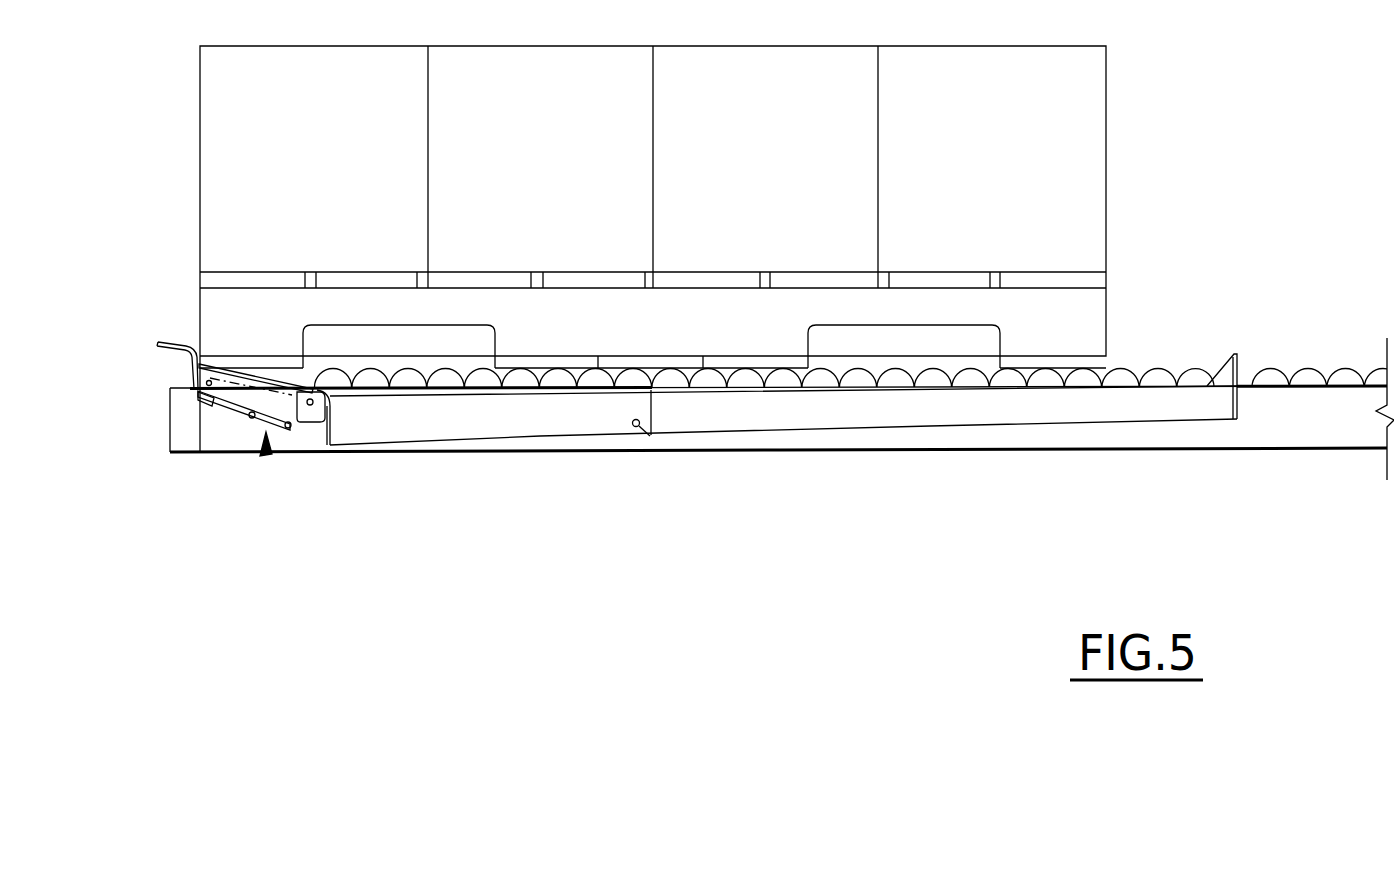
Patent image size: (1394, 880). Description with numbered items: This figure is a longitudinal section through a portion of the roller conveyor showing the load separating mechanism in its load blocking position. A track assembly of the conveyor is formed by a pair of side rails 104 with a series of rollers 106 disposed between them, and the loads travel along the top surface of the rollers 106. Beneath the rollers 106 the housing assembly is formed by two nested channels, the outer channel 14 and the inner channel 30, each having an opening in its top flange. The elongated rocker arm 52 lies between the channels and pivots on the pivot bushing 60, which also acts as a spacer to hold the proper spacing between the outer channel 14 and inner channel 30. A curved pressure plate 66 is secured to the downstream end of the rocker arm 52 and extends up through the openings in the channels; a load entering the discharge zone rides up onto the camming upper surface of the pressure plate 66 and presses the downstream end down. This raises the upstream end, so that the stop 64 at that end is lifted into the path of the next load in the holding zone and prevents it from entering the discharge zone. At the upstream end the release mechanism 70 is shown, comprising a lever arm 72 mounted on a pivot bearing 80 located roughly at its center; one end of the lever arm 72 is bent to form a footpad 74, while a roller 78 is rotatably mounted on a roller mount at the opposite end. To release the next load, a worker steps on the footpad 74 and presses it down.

The outer channel 14 is at (483, 452).
The inner channel 30 is at (542, 450).
The rocker arm 52 is at (1063, 413).
The pivot bushing 60 is at (650, 440).
The stop 64 is at (1235, 358).
The pressure plate 66 is at (283, 378).
The release mechanism 70 is at (268, 455).
The lever arm 72 is at (210, 402).
The footpad 74 is at (176, 346).
The roller 78 is at (311, 395).
The pivot bearing 80 is at (252, 418).
The side rails 104 is at (940, 450).
The rollers 106 is at (1165, 372).